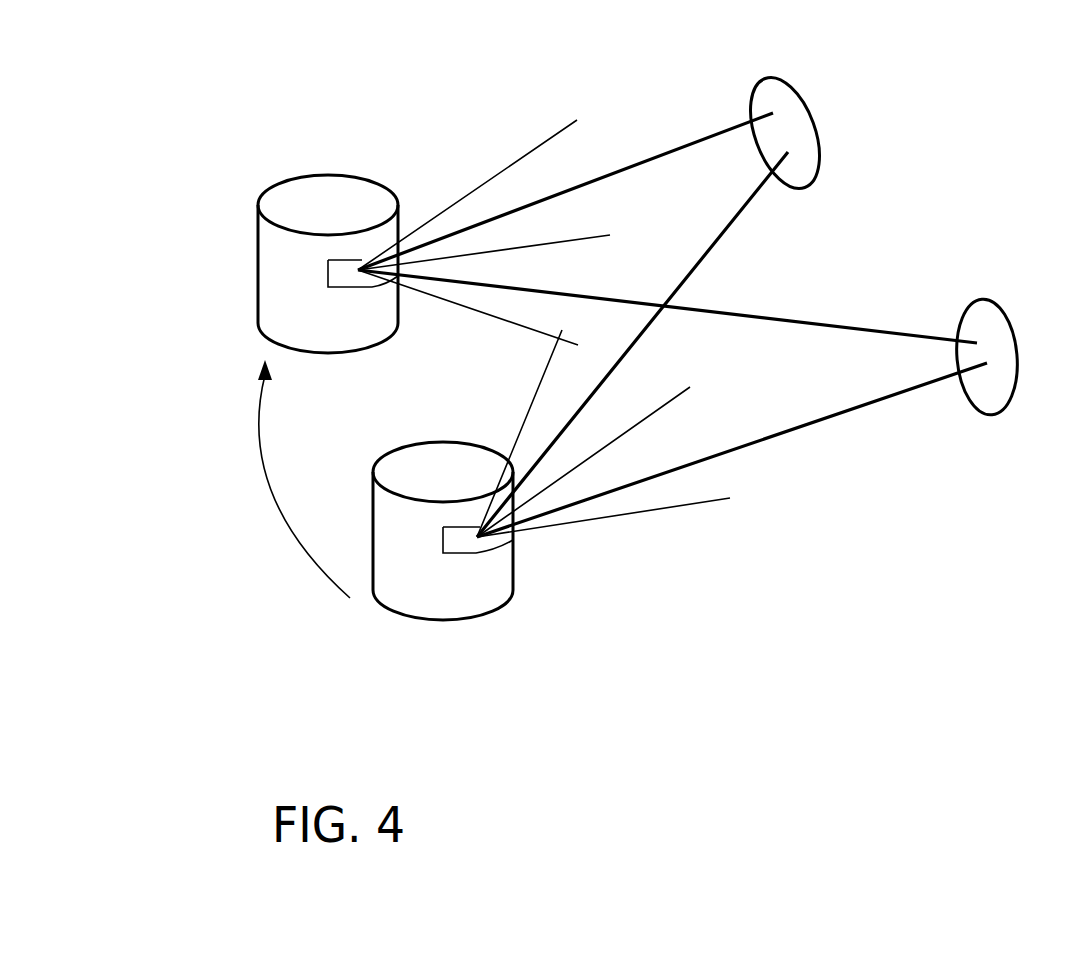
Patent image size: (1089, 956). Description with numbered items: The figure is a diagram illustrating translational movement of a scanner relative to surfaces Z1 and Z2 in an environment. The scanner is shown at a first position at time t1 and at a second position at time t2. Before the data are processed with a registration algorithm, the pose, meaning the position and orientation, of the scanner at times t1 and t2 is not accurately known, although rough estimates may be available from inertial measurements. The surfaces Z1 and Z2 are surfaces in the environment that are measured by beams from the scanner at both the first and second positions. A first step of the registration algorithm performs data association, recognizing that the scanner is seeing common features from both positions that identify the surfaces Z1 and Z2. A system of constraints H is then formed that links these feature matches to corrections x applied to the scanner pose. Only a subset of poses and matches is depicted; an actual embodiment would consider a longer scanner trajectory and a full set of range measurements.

The surface Z1 is at (801, 133).
The surface Z2 is at (1012, 357).
The system of constraints H is at (644, 274).
The time t1 is at (201, 344).
The time t2 is at (375, 637).
The corrections x is at (304, 479).